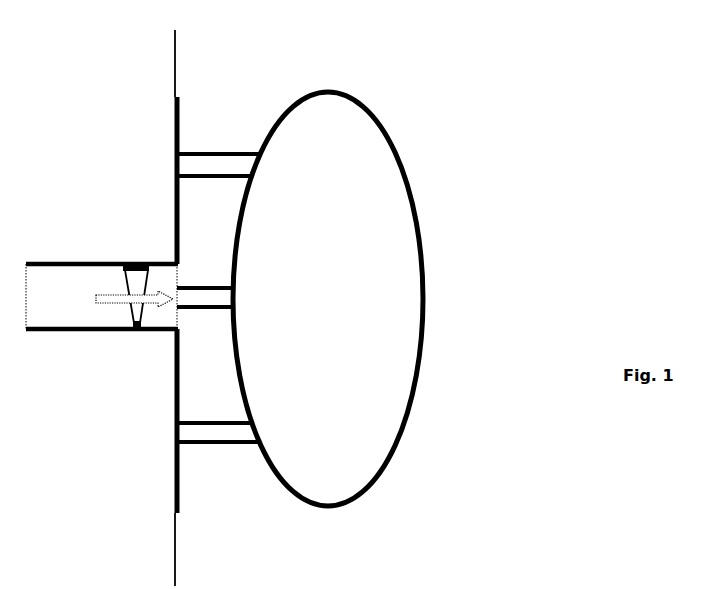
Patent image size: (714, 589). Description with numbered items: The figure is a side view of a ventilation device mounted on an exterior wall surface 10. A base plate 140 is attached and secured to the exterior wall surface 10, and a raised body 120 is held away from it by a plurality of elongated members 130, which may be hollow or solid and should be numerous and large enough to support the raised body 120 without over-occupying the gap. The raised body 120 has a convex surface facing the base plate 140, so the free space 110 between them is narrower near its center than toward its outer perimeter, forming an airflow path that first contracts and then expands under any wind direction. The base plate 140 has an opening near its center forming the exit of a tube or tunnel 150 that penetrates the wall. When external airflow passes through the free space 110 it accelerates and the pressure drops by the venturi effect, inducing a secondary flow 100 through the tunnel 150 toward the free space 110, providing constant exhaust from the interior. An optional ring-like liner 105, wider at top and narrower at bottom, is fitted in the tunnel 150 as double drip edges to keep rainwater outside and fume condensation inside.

The exterior wall surface 10 is at (178, 56).
The secondary flow 100 is at (120, 305).
The ring-like liner 105 is at (132, 262).
The free space 110 is at (206, 299).
The raised body 120 is at (328, 299).
The elongated members 130 is at (226, 151).
The base plate 140 is at (180, 474).
The tube or tunnel 150 is at (64, 303).